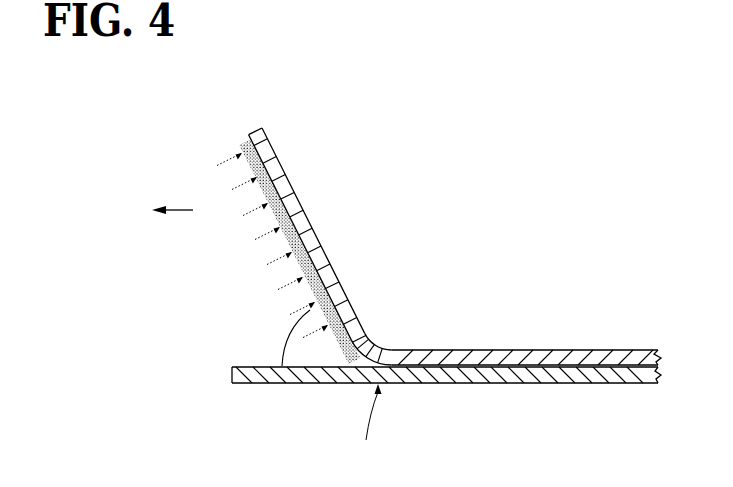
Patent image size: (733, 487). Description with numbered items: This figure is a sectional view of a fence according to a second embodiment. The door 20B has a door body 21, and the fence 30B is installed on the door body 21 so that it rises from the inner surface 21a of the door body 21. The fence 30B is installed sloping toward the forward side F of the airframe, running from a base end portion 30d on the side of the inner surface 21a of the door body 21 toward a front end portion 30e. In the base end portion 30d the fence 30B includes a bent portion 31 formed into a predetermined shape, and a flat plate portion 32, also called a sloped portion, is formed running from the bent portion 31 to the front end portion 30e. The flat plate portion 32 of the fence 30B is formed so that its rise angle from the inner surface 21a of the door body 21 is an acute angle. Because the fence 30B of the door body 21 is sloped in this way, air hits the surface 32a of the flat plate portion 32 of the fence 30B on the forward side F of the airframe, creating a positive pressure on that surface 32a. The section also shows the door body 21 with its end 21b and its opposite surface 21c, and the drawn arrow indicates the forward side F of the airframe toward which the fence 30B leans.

The door 20B is at (364, 427).
The door body 21 is at (512, 383).
The inner surface 21a is at (612, 363).
The end of panel 21b is at (232, 371).
The lower surface of panel 21c is at (613, 383).
The fence 30B is at (259, 129).
The base end portion 30d is at (437, 351).
The front end portion 30e is at (249, 134).
The bent portion 31 is at (367, 335).
The flat plate portion 32 is at (300, 204).
The surface 32a is at (268, 221).
The forward side of the airframe F is at (122, 184).